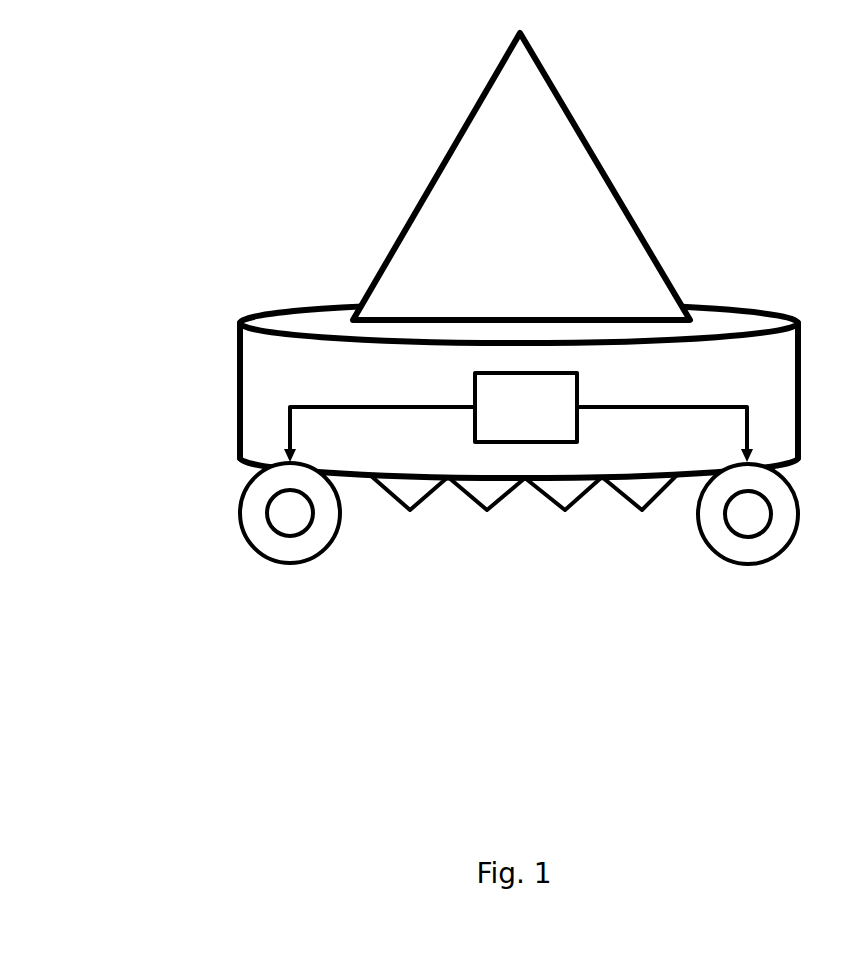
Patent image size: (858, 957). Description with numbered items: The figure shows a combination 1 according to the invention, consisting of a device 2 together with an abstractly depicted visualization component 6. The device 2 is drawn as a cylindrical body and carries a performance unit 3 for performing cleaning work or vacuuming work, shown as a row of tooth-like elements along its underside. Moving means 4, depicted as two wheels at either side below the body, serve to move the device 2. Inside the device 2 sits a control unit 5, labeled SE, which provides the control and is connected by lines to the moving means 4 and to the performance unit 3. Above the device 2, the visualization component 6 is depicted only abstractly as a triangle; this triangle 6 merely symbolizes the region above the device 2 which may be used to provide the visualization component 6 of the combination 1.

The combination 1 is at (450, 349).
The device 2 is at (236, 408).
The performance unit 3 is at (513, 500).
The moving means 4 is at (289, 572).
The control unit 5 is at (525, 452).
The visualization component 6 is at (430, 168).